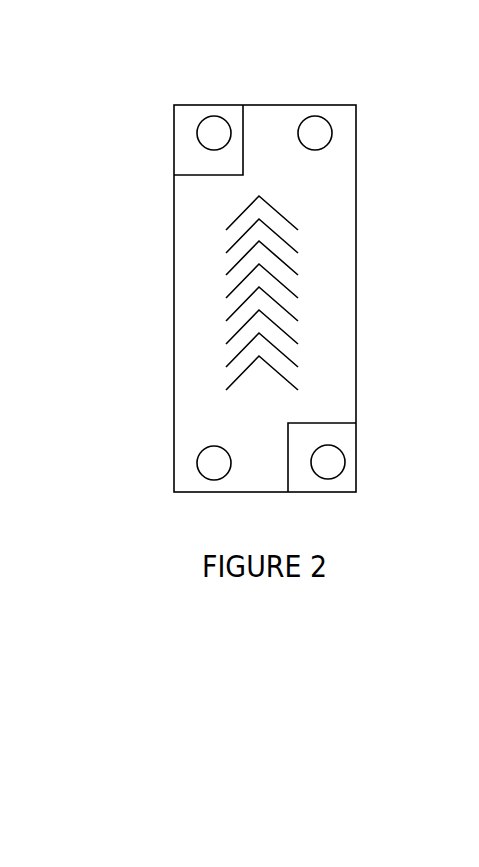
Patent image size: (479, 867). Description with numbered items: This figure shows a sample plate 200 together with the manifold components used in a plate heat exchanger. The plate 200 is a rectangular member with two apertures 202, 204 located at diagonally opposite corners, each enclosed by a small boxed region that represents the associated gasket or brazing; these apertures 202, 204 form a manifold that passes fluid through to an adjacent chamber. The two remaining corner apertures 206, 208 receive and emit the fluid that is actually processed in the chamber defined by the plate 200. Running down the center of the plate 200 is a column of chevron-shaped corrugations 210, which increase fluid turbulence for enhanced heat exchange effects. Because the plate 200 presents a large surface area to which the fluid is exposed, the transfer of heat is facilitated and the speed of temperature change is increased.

The plate 200 is at (299, 105).
The aperture 202 is at (243, 135).
The aperture 204 is at (342, 421).
The aperture 206 is at (332, 134).
The aperture 208 is at (197, 463).
The corrugations 210 is at (293, 272).